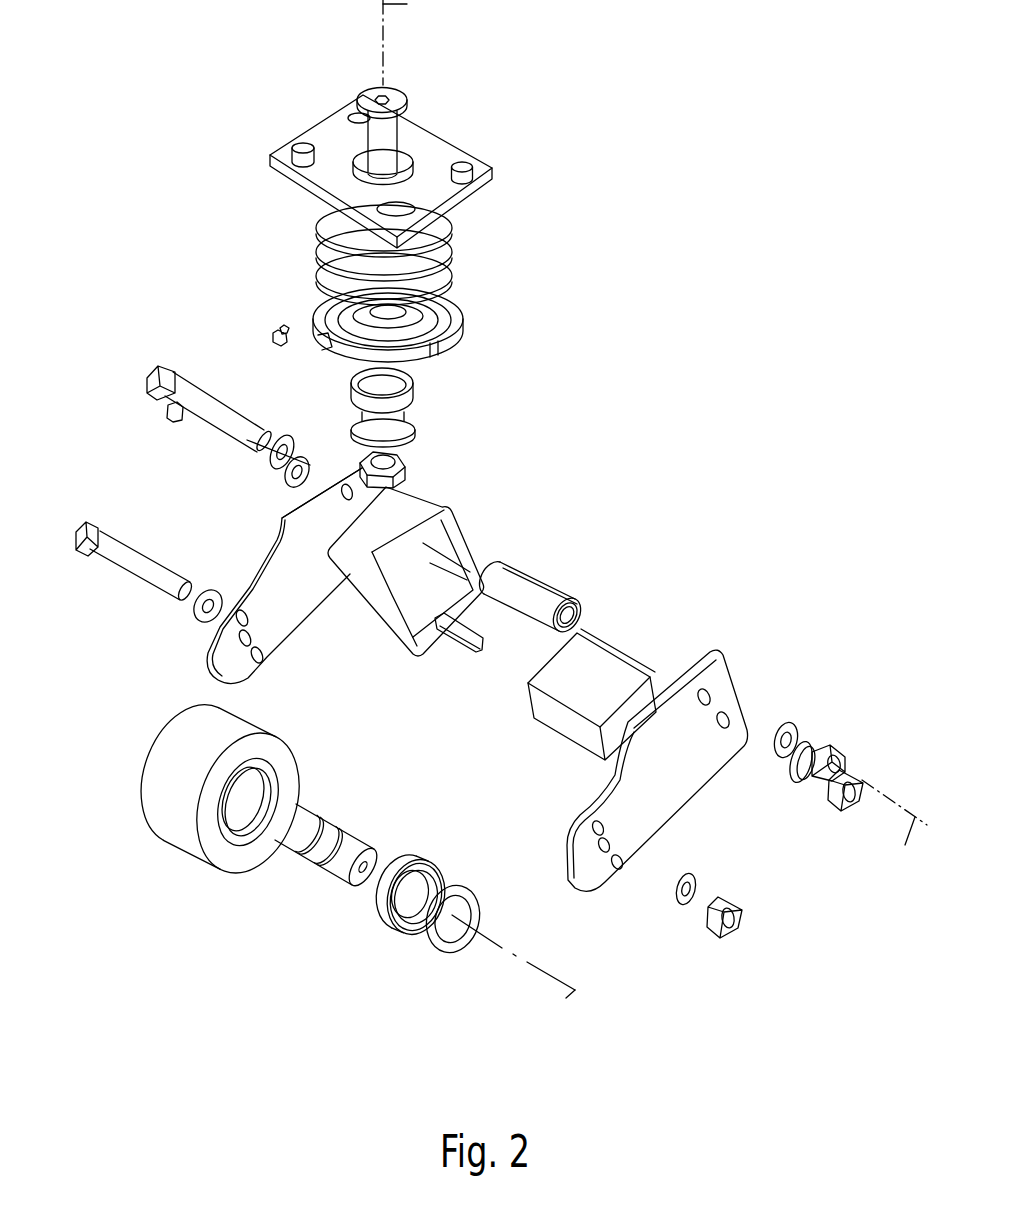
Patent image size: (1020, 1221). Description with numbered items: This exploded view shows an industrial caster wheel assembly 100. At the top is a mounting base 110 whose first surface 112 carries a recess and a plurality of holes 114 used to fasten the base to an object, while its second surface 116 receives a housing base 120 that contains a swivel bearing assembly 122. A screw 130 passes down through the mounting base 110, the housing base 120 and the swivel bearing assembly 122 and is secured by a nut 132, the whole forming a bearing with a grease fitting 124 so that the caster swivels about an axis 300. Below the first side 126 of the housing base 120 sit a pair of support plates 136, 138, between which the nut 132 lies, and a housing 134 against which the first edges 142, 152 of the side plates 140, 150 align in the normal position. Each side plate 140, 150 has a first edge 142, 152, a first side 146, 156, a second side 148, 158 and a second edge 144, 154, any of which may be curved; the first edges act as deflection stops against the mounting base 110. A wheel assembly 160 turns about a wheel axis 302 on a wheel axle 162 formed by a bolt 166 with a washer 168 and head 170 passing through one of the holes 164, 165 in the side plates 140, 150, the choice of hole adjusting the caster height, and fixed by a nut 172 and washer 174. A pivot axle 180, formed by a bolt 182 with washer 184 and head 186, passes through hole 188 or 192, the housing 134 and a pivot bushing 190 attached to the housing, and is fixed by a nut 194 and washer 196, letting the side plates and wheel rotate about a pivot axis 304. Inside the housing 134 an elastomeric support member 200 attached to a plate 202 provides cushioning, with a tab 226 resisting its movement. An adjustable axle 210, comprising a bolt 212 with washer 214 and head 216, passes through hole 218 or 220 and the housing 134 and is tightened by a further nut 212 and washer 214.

The industrial caster wheel assembly 100 is at (676, 343).
The mounting base 110 is at (432, 133).
The first surface 112 is at (432, 148).
The holes 114 is at (472, 170).
The second surface 116 is at (465, 196).
The housing base 120 is at (455, 332).
The swivel bearing assembly 122 is at (490, 277).
The grease fitting 124 is at (280, 324).
The first side 126 is at (430, 360).
The screw 130 is at (398, 97).
The nut 132 is at (410, 462).
The housing 134 is at (437, 500).
The support plate 136 is at (427, 543).
The support plate 138 is at (363, 453).
The side plate 140 is at (283, 612).
The first edge 142 is at (293, 492).
The second edge 144 is at (380, 502).
The first side 146 is at (267, 543).
The second side 148 is at (287, 643).
The side plate 150 is at (640, 820).
The first edge 152 is at (695, 658).
The second edge 154 is at (725, 670).
The first side 156 is at (618, 760).
The second side 158 is at (678, 807).
The wheel assembly 160 is at (249, 903).
The wheel axle 162 is at (110, 538).
The holes 164 is at (259, 665).
The holes 165 is at (622, 875).
The bolt 166 is at (160, 587).
The washer 168 is at (197, 620).
The head 170 is at (80, 523).
The nut 172 is at (738, 918).
The washer 174 is at (697, 886).
The pivot axle 180 is at (178, 392).
The bolt 182 is at (227, 417).
The washer 184 is at (268, 468).
The head 186 is at (153, 370).
The hole 188 is at (280, 517).
The pivot bushing 190 is at (547, 583).
The hole 192 is at (710, 696).
The nut 194 is at (813, 782).
The washer 196 is at (790, 752).
The elastomeric support member 200 is at (555, 722).
The plate 202 is at (612, 655).
The adjustable axle 210 is at (197, 423).
The bolt 212 is at (247, 440).
The washer 214 is at (308, 465).
The head 216 is at (170, 422).
The hole 218 is at (357, 503).
The hole 220 is at (728, 720).
The tab 226 is at (465, 647).
The axis 300 is at (411, 9).
The wheel axis 302 is at (565, 989).
The pivot axis 304 is at (907, 847).